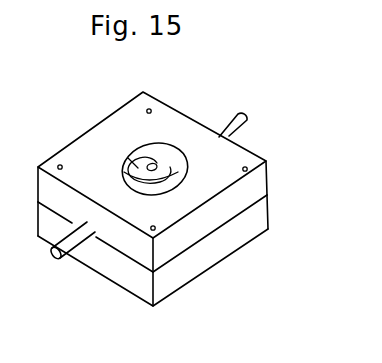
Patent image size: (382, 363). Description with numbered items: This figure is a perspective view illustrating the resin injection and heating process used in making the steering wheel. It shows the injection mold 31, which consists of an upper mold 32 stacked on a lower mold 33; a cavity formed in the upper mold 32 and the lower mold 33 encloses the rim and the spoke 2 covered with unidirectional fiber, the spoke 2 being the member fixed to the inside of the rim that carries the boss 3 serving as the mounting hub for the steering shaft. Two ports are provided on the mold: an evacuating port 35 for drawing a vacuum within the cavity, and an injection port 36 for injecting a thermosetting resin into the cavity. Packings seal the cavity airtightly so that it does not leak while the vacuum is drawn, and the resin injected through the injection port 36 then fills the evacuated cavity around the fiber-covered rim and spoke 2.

The spoke 2 is at (181, 170).
The boss 3 is at (160, 166).
The injection mold 31 is at (250, 186).
The upper mold 32 is at (167, 242).
The lower mold 33 is at (152, 287).
The evacuating port 35 is at (246, 121).
The injection port 36 is at (70, 240).